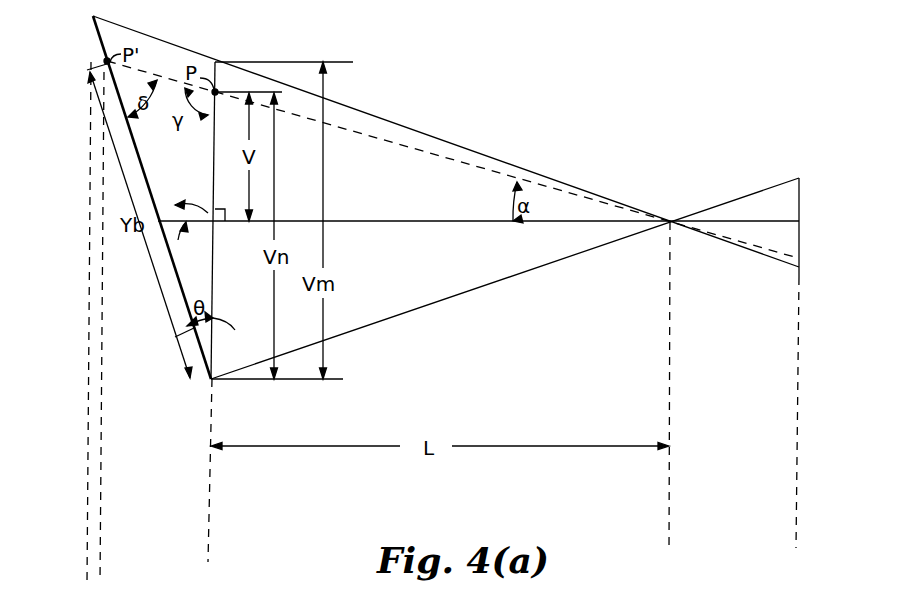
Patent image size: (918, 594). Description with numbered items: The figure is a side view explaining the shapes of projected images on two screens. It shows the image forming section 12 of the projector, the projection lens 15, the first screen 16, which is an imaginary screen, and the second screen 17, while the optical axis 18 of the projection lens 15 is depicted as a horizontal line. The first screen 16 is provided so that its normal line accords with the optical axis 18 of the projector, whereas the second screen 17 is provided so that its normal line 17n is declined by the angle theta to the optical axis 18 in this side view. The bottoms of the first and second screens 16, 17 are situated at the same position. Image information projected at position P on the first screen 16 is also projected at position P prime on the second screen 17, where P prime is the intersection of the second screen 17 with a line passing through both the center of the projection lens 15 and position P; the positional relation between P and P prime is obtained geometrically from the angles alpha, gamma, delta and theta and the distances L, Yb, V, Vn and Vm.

The image forming section 12 is at (800, 200).
The projection lens 15 is at (670, 221).
The first screen 16 is at (217, 77).
The second screen 17 is at (95, 32).
The normal line of the second screen 17n is at (178, 217).
The optical axis 18 is at (375, 221).